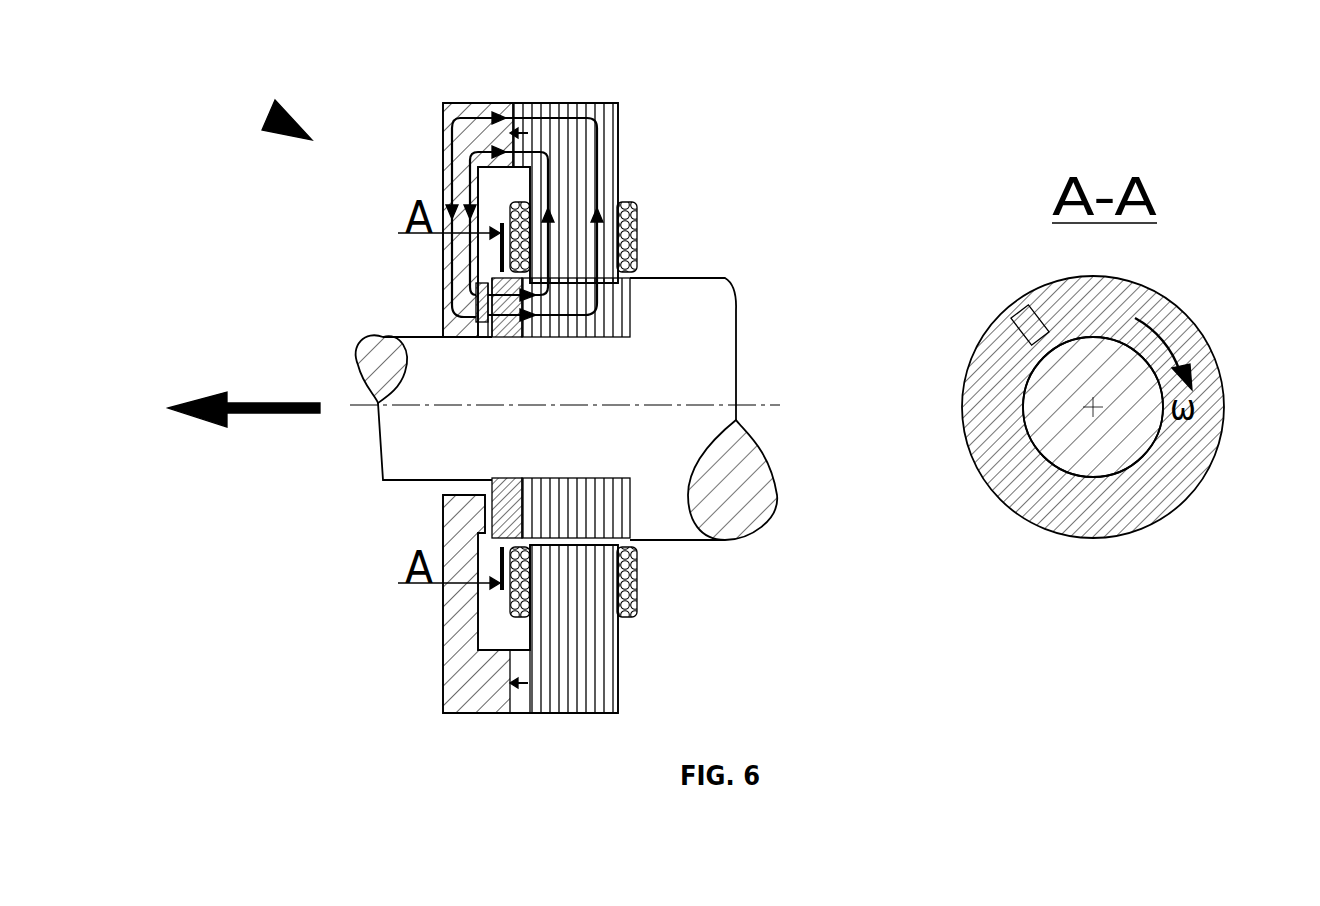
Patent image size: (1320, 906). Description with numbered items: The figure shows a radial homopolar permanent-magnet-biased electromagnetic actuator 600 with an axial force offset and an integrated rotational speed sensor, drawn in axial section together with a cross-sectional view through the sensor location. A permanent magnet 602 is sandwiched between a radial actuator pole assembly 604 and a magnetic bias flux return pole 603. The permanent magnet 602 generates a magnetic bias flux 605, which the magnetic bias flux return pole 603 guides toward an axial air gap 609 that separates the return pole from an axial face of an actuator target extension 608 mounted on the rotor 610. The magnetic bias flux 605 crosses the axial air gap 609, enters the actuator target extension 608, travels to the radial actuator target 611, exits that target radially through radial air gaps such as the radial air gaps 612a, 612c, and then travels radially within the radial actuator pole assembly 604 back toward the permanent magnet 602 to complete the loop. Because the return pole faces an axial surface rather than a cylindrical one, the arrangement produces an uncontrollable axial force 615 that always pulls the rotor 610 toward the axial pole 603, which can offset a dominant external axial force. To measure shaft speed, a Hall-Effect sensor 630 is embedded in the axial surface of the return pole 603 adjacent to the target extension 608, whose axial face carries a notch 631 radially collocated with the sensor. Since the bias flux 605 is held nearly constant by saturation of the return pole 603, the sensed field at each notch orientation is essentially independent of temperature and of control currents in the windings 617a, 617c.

The electromagnetic actuator 600 is at (268, 115).
The permanent magnet 602 is at (514, 102).
The magnetic bias flux return pole 603 is at (443, 132).
The radial actuator pole assembly 604 is at (608, 166).
The magnetic bias flux 605 is at (573, 102).
The actuator target extension 608 is at (440, 493).
The axial air gap 609 is at (470, 258).
The rotor 610 is at (717, 350).
The radial actuator target 611 is at (640, 315).
The radial air gap 612a is at (640, 268).
The radial air gap 612c is at (640, 541).
The axial force Fz 615 is at (272, 415).
The winding 617a is at (640, 213).
The winding 617c is at (640, 601).
The Hall-Effect sensor 630 is at (476, 286).
The notch 631 is at (490, 333).